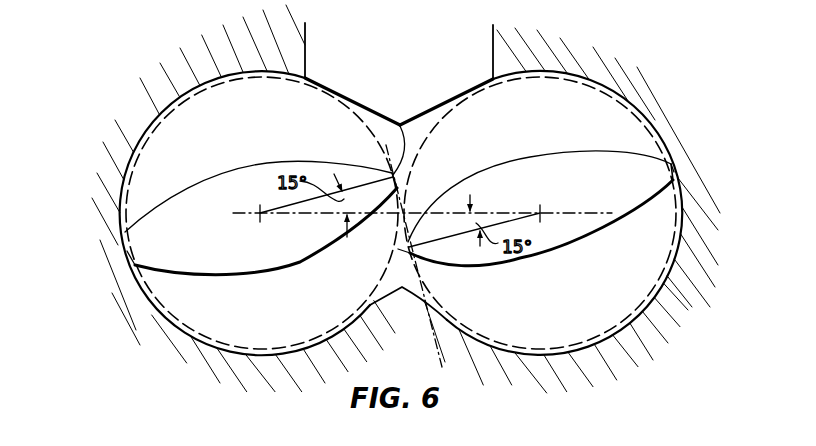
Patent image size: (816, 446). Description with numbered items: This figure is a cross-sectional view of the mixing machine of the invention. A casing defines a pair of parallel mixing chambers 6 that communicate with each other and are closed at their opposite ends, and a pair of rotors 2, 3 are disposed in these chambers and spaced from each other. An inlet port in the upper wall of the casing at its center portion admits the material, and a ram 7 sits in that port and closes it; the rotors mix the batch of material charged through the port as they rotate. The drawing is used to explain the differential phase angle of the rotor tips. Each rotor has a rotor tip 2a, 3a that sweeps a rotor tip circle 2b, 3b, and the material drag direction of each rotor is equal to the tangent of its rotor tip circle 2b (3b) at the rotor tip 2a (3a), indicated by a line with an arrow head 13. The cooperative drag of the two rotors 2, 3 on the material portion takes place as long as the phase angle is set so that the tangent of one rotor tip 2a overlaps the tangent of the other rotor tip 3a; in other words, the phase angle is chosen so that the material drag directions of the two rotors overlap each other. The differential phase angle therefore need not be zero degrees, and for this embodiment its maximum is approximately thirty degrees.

The mixing chamber 6 is at (190, 87).
The ram 7 is at (483, 41).
The rotor 3 is at (188, 190).
The rotor tip 3a is at (386, 145).
The rotor tip circle 3b is at (341, 97).
The rotor 2 is at (590, 160).
The rotor tip 2a is at (398, 249).
The rotor tip circle 2b is at (443, 105).
The line with an arrow head 13 is at (410, 299).